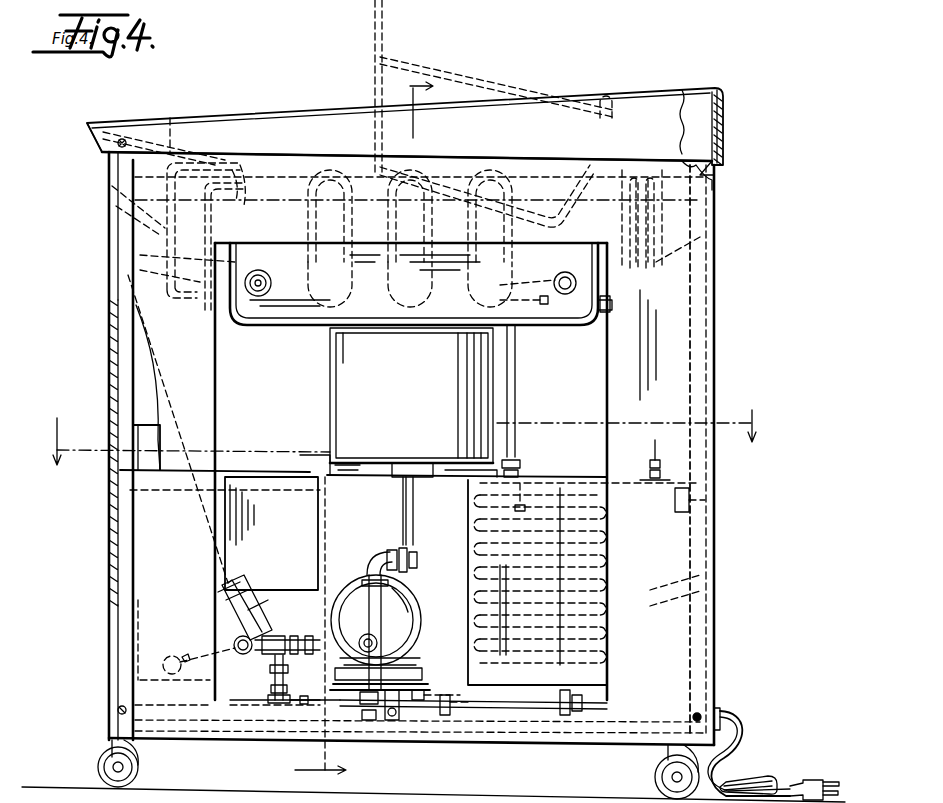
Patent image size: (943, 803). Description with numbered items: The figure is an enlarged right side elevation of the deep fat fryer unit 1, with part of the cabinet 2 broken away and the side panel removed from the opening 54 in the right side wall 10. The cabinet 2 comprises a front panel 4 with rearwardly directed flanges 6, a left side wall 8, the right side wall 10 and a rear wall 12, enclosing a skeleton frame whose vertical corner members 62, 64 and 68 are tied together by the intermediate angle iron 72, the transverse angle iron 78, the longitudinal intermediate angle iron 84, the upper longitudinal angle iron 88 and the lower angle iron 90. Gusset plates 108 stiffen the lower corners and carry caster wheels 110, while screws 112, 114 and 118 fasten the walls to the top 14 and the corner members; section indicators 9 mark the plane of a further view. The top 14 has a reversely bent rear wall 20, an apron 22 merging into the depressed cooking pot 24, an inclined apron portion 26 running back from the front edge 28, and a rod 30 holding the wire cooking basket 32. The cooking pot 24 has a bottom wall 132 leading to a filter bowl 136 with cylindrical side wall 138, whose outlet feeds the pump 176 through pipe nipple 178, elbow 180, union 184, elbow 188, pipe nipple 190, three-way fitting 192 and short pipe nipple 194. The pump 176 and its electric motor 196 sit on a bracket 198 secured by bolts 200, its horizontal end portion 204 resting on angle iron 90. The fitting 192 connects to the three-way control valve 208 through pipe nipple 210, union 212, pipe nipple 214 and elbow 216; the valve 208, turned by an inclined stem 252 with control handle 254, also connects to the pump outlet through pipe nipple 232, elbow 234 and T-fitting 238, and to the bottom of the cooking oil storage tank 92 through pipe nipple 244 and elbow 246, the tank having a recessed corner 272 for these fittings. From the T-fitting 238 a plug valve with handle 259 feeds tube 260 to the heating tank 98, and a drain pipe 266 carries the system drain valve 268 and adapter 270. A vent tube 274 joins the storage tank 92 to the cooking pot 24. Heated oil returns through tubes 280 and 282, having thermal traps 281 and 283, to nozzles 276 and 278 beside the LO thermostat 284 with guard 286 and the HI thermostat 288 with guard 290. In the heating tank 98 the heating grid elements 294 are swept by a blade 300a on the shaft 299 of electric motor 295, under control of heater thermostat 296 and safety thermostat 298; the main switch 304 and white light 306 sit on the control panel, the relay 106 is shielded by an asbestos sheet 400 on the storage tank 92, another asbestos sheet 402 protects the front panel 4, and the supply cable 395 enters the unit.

The deep fat fryer unit 1 is at (305, 97).
The cabinet 2 is at (690, 330).
The front panel 4 is at (106, 325).
The rearwardly directed flanges 6 is at (123, 168).
The left side wall 8 is at (407, 425).
The section line 9- 9 is at (404, 425).
The right side wall 10 is at (318, 168).
The rear wall 12 is at (718, 172).
The top 14 is at (641, 86).
The reversely bent rear wall 20 is at (723, 116).
The apron 22 is at (640, 170).
The cooking pot 24 is at (585, 225).
The inclined apron portion 26 is at (171, 117).
The front edge 28 is at (88, 125).
The rod 30 is at (606, 100).
The wire cooking basket 32 is at (373, 25).
The opening 54 is at (382, 250).
The vertical corner member 62 is at (128, 448).
The vertical corner member 64 is at (140, 620).
The vertical corner member 68 is at (712, 190).
The intermediate angle iron 72 is at (118, 470).
The transverse angle iron member 78 is at (705, 474).
The intermediate angle iron 84 is at (355, 483).
The longitudinal angle iron 88 is at (664, 178).
The angle iron 90 is at (160, 742).
The cooking oil storage tank 92 is at (318, 508).
The cooking oil heating tank 98 is at (537, 582).
The relay 106 is at (135, 360).
The gusset plates 108 is at (148, 718).
The caster wheels 110 is at (100, 752).
The screws 112 is at (123, 138).
The screws 114 is at (118, 710).
The screws 118 is at (692, 715).
The bottom wall 132 is at (532, 325).
The filter bowl 136 is at (327, 345).
The cylindrical side wall 138 is at (337, 368).
The pump 176 is at (410, 595).
The pipe nipple 178 is at (402, 500).
The elbow 180 is at (416, 561).
The union 184 is at (400, 545).
The elbow 188 is at (366, 554).
The pipe nipple 190 is at (366, 575).
The three-way fitting 192 is at (409, 462).
The short pipe nipple 194 is at (410, 636).
The electric motor 196 is at (396, 588).
The bracket 198 is at (405, 672).
The bolts 200 is at (411, 653).
The horizontal end portion 204 is at (345, 742).
The three-way control valve 208 is at (253, 586).
The pipe nipple 210 is at (325, 630).
The union 212 is at (305, 636).
The pipe nipple 214 is at (285, 629).
The elbow 216 is at (234, 642).
The pipe nipple 232 is at (272, 672).
The elbow 234 is at (270, 700).
The T-fitting 238 is at (330, 688).
The pipe nipple 244 is at (190, 650).
The elbow 246 is at (170, 656).
The stem 252 is at (198, 512).
The control handle 254 is at (125, 262).
The handle 259 is at (428, 690).
The tube 260 is at (530, 715).
The drain pipe 266 is at (380, 740).
The system drain valve 268 is at (415, 735).
The adapter 270 is at (460, 738).
The recessed corner 272 is at (288, 588).
The vent tube 274 is at (238, 197).
The nozzle 276 is at (268, 300).
The nozzle 278 is at (500, 300).
The tube 280 is at (515, 385).
The traps 281 is at (372, 280).
The tube 282 is at (705, 236).
The trap 283 is at (707, 272).
The thermostat 284 is at (272, 283).
The guard 286 is at (250, 215).
The thermostat 288 is at (500, 285).
The guard 290 is at (556, 276).
The control panel 294 is at (128, 278).
The electric motor 295 is at (577, 748).
The heater thermostat 296 is at (508, 513).
The safety thermostat 298 is at (707, 514).
The shaft 299 is at (540, 668).
The blade 300a is at (615, 672).
The main switch 304 is at (165, 250).
The white light 306 is at (110, 195).
The cable 395 is at (760, 780).
The sheet of asbestos 400 is at (252, 468).
The sheet of asbestos 402 is at (106, 345).